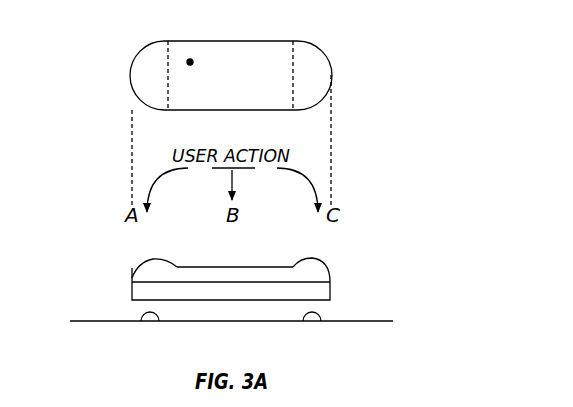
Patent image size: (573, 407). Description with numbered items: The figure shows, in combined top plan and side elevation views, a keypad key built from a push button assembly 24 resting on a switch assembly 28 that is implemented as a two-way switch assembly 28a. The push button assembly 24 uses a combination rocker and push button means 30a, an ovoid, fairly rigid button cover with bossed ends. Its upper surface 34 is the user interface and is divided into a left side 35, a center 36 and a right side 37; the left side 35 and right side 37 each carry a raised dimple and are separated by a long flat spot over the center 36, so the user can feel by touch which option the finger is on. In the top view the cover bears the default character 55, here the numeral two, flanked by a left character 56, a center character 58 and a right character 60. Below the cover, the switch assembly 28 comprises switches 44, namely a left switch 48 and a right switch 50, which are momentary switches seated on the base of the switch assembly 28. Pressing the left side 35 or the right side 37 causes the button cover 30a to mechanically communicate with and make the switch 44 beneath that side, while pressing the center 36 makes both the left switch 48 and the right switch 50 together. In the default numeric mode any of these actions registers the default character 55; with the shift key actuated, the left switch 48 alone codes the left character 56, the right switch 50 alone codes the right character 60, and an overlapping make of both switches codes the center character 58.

The push button assembly 24 is at (116, 180).
The switch assembly 28 is at (88, 318).
The two-way switch assembly 28a is at (240, 322).
The combination rocker and push button means 30a is at (333, 75).
The upper surface 34 is at (189, 58).
The left side 35 is at (146, 60).
The center 36 is at (208, 60).
The right side 37 is at (306, 55).
The switch 44 is at (142, 326).
The left switch 48 is at (140, 314).
The right switch 50 is at (323, 317).
The default character 55 is at (225, 98).
The left character 56 is at (147, 92).
The center character 58 is at (266, 68).
The right character 60 is at (310, 90).